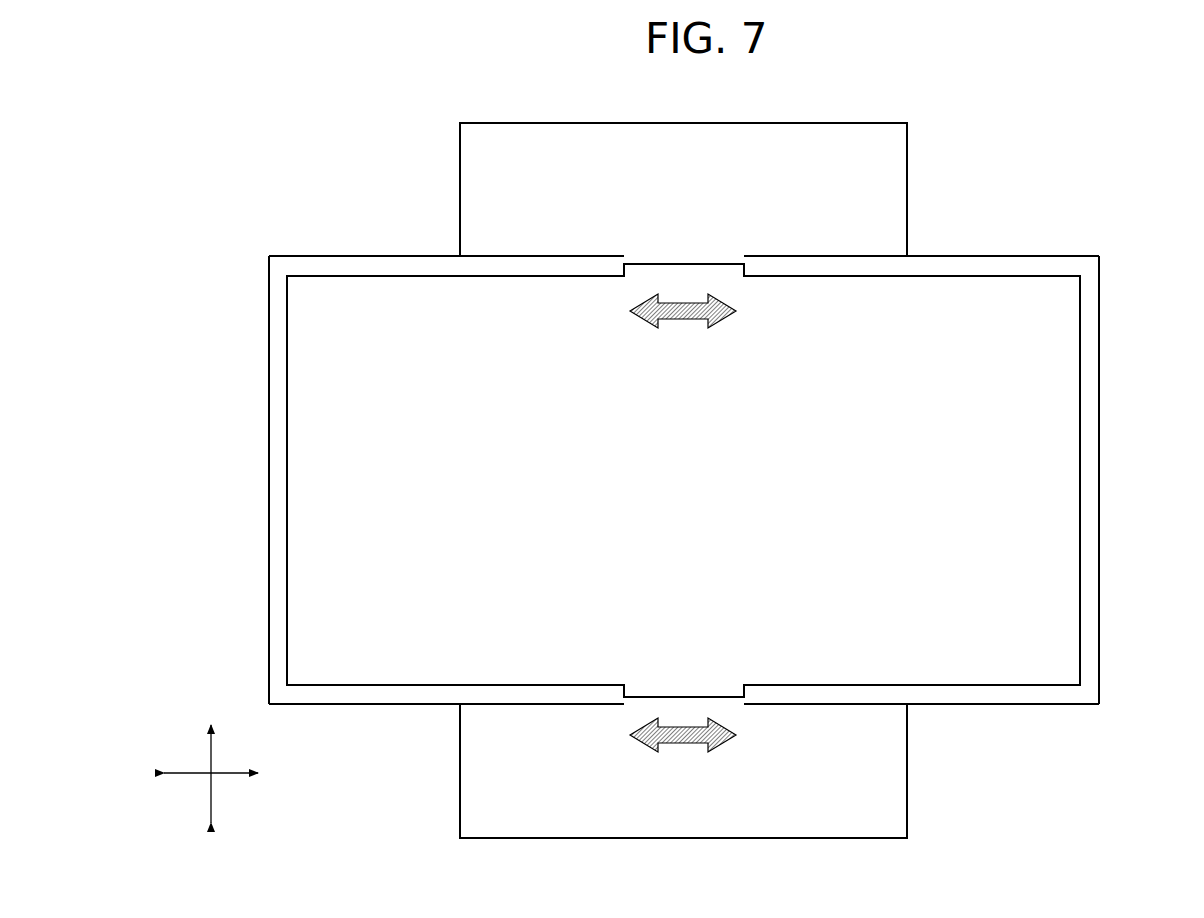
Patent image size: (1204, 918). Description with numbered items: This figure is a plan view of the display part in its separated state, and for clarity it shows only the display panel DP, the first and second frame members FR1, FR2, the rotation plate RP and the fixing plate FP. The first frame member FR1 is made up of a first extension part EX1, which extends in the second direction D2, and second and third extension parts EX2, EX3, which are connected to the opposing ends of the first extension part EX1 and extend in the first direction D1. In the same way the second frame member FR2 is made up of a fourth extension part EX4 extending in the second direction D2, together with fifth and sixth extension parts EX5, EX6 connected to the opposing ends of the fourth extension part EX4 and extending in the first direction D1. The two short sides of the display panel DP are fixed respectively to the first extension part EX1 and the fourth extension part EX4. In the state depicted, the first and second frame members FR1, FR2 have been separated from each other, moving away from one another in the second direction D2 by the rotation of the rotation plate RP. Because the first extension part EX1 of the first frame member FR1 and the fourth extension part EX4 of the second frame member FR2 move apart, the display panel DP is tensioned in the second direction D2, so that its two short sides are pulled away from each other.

The display panel DP is at (409, 665).
The first extension part EX1 is at (1090, 480).
The second extension part EX2 is at (1003, 705).
The third extension part EX3 is at (947, 262).
The fourth extension part EX4 is at (277, 477).
The fifth extension part EX5 is at (352, 698).
The sixth extension part EX6 is at (333, 262).
The first frame member FR1 is at (1004, 255).
The second frame member FR2 is at (394, 255).
The rotation plate RP is at (691, 257).
The fixing plate FP is at (895, 771).
The first direction D1 is at (213, 759).
The second direction D2 is at (229, 774).